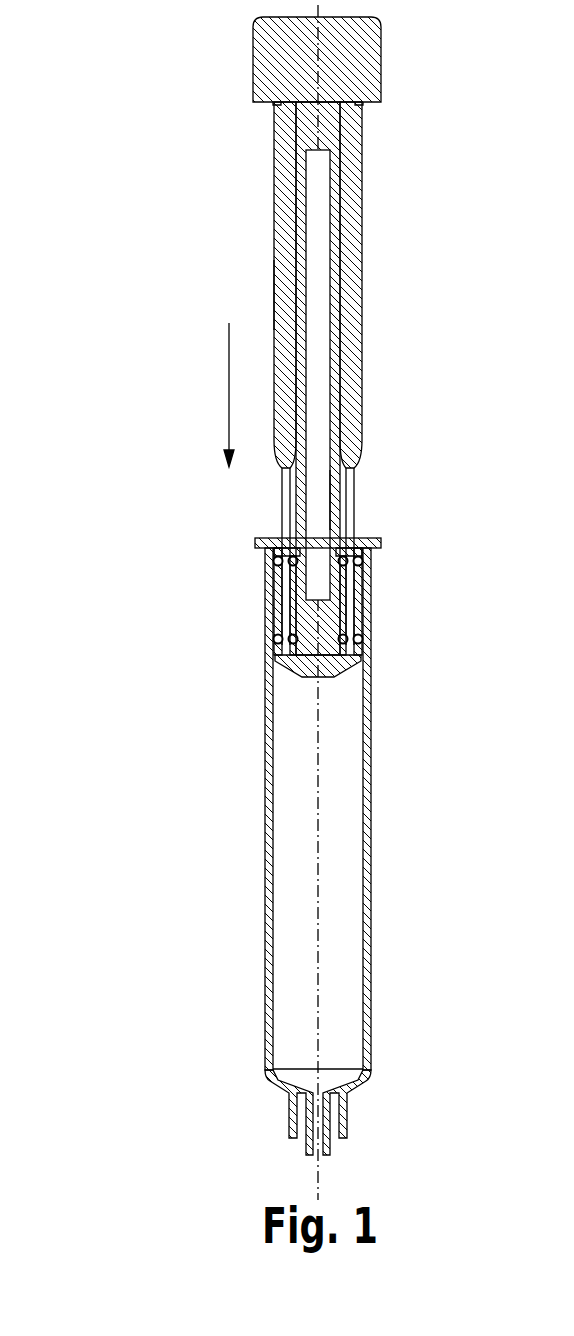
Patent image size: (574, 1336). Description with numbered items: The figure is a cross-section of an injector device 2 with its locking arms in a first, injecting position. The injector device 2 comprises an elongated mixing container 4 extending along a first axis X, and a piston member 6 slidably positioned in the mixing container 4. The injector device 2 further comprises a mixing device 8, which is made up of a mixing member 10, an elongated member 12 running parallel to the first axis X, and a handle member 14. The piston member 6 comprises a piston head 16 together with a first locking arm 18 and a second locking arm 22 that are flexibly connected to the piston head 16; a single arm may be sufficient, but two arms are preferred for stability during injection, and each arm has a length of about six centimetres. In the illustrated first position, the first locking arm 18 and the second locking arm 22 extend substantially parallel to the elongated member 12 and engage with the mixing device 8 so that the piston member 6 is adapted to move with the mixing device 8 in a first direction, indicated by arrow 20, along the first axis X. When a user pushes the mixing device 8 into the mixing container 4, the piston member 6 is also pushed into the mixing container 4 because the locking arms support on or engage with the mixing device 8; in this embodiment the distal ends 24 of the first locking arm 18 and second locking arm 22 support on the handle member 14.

The injector device 2 is at (150, 160).
The mixing container 4 is at (267, 760).
The piston member 6 is at (266, 593).
The mixing device 8 is at (300, 199).
The mixing member 10 is at (343, 670).
The elongated member 12 is at (333, 497).
The handle member 14 is at (272, 50).
The piston head 16 is at (318, 605).
The first locking arm 18 is at (282, 282).
The arrow 20 is at (228, 387).
The second locking arm 22 is at (355, 313).
The distal ends 24 is at (362, 102).
The first axis X is at (333, 602).